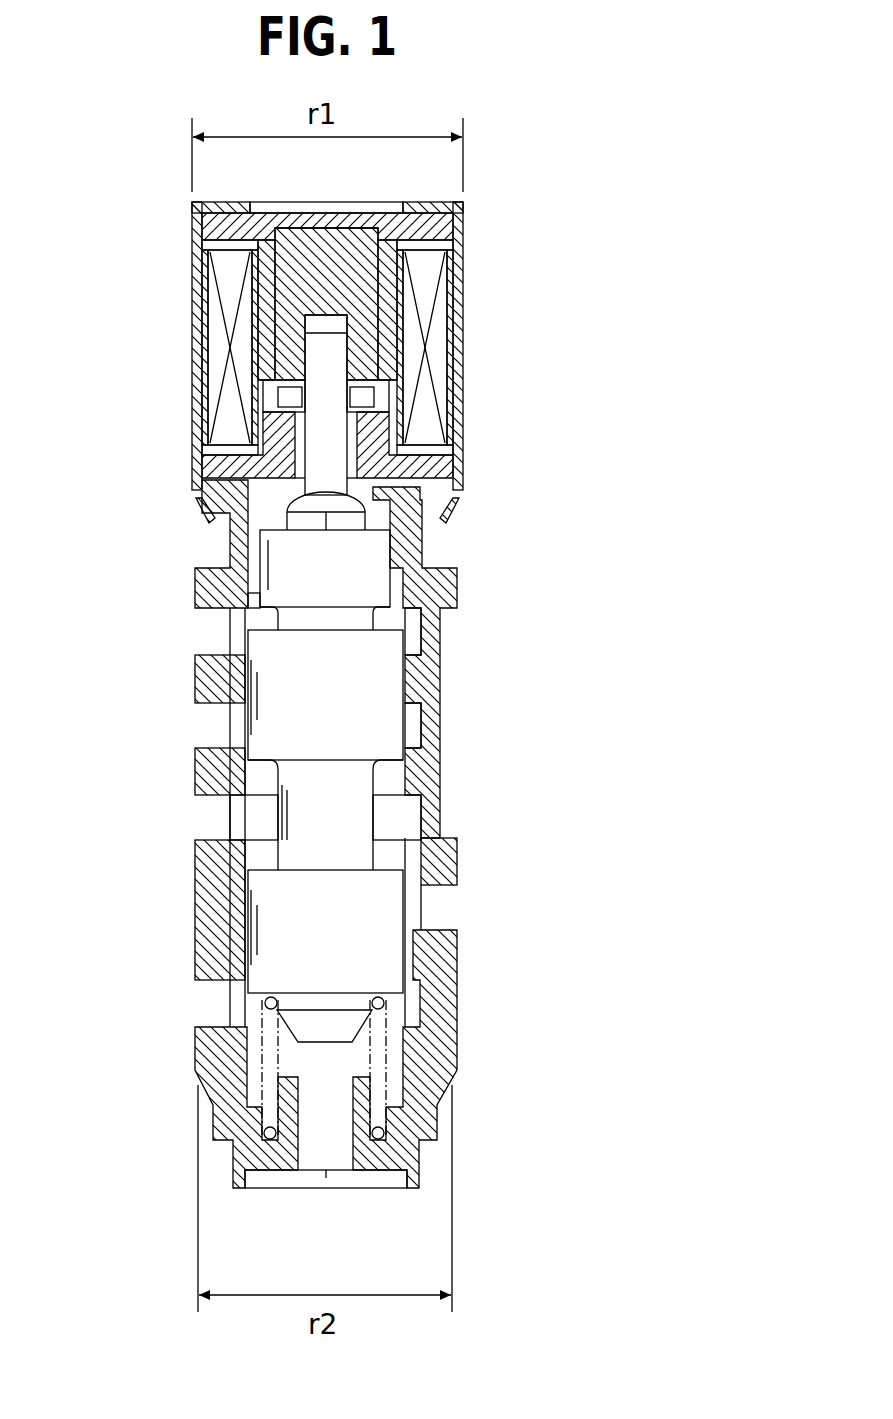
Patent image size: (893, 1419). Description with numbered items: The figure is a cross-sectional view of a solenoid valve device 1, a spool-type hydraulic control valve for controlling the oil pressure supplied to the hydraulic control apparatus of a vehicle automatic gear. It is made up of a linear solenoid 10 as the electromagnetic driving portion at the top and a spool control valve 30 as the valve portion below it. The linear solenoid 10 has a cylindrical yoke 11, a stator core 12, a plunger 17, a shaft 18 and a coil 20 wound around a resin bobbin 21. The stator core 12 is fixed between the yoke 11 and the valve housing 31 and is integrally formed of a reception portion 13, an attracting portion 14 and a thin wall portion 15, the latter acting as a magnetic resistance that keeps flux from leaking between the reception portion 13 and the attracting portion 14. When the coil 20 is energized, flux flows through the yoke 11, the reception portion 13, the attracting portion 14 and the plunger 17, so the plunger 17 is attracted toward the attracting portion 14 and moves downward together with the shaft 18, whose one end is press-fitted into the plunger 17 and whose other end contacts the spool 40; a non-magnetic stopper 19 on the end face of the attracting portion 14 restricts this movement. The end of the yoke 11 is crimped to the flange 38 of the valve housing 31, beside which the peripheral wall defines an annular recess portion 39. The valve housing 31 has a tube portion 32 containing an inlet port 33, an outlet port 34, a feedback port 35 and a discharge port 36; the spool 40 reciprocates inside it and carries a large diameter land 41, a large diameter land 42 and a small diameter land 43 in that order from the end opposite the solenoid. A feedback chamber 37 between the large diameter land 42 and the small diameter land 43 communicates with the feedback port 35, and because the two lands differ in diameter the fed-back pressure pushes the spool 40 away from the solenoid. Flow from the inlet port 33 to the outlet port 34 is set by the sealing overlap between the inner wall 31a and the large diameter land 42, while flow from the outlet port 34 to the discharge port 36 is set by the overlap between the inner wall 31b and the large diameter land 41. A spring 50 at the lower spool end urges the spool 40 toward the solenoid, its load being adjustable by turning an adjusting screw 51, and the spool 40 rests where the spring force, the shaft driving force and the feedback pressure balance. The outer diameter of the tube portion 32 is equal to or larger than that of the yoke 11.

The solenoid valve device 1 is at (468, 196).
The linear solenoid 10 is at (470, 318).
The yoke 11 is at (200, 294).
The stator core 12 is at (438, 226).
The reception portion 13 is at (445, 268).
The attracting portion 14 is at (447, 418).
The thin wall portion 15 is at (447, 378).
The plunger 17 is at (287, 354).
The shaft 18 is at (316, 448).
The stopper 19 is at (292, 400).
The coil 20 is at (216, 347).
The bobbin 21 is at (248, 262).
The spool control valve 30 is at (445, 687).
The valve housing 31 is at (437, 1047).
The inner wall 31a is at (248, 800).
The inner wall 31b is at (388, 845).
The tube portion 32 is at (206, 957).
The inlet port 33 is at (216, 732).
The outlet port 34 is at (216, 812).
The feedback port 35 is at (218, 625).
The discharge port 36 is at (432, 917).
The feedback chamber 37 is at (250, 637).
The flange 38 is at (208, 502).
The annular recess portion 39 is at (230, 538).
The spool 40 is at (410, 640).
The large diameter land 41 is at (383, 965).
The large diameter land 42 is at (385, 737).
The small diameter land 43 is at (375, 558).
The spring 50 is at (392, 1090).
The adjusting screw 51 is at (276, 1163).